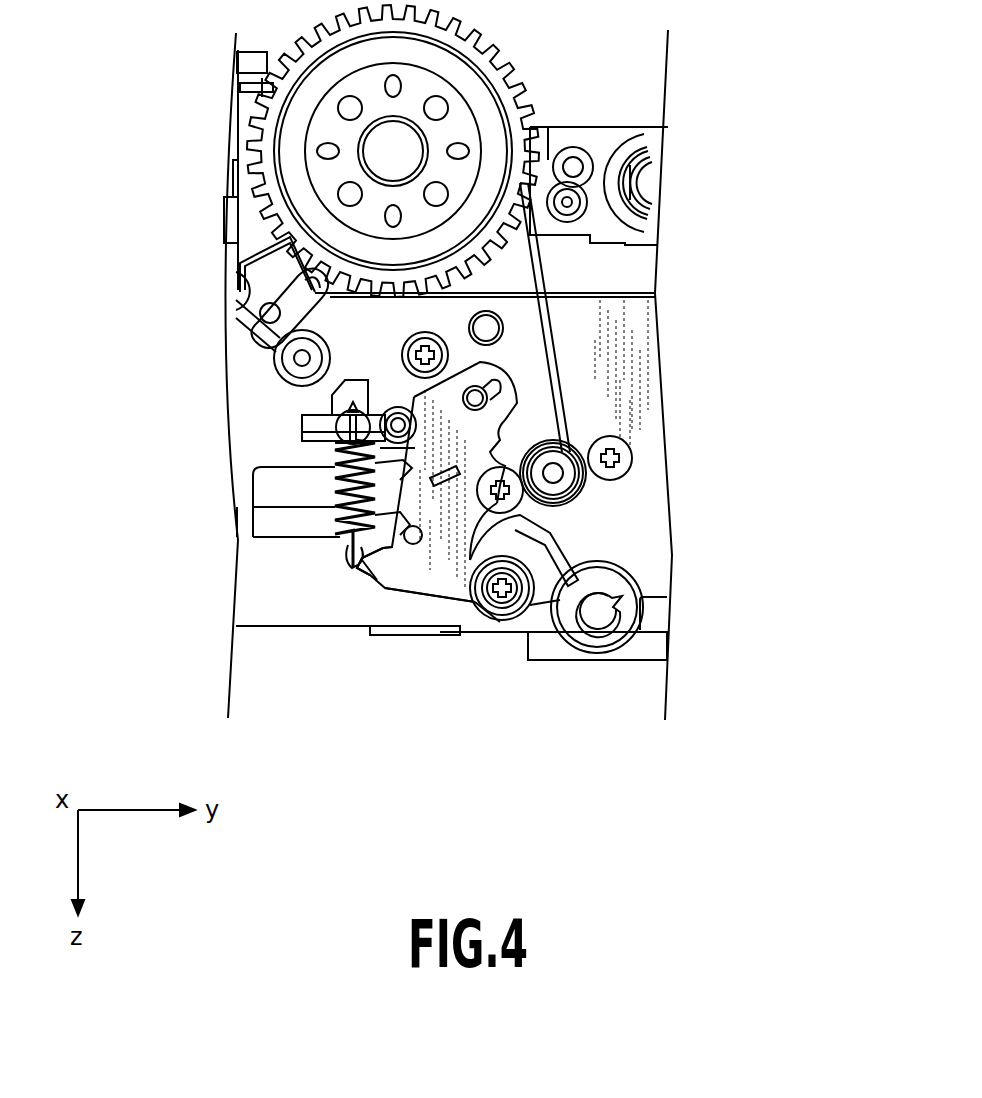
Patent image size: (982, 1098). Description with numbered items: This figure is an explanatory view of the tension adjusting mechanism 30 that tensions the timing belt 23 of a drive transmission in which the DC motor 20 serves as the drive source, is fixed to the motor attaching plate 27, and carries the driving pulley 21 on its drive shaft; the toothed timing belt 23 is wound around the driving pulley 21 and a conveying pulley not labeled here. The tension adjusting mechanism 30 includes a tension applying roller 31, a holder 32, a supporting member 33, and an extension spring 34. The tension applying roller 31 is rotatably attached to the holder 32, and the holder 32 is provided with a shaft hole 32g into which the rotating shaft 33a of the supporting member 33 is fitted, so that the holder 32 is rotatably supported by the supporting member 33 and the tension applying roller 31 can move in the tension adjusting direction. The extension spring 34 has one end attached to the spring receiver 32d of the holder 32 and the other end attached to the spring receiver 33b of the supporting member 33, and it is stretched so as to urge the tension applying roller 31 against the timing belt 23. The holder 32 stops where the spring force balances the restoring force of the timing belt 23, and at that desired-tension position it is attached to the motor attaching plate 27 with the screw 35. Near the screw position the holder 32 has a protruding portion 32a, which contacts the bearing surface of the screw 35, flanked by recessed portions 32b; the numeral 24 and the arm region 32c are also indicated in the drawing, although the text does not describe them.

The DC motor 20 is at (580, 488).
The driving pulley 21 is at (570, 465).
The timing belt 23 is at (533, 248).
The gear 24 is at (317, 133).
The motor attaching plate 27 is at (597, 293).
The tension adjusting mechanism 30 is at (378, 592).
The tension applying roller 31 is at (507, 390).
The holder 32 is at (433, 578).
The protruding portion 32a is at (505, 622).
The recessed portion 32b is at (506, 623).
The lever arm 32c is at (547, 572).
The spring receiver 32d is at (353, 565).
The shaft hole 32g is at (610, 633).
The supporting member 33 is at (355, 358).
The rotating shaft 33a is at (610, 617).
The spring receiver 33b is at (353, 427).
The extension spring 34 is at (345, 493).
The screw 35 is at (490, 607).